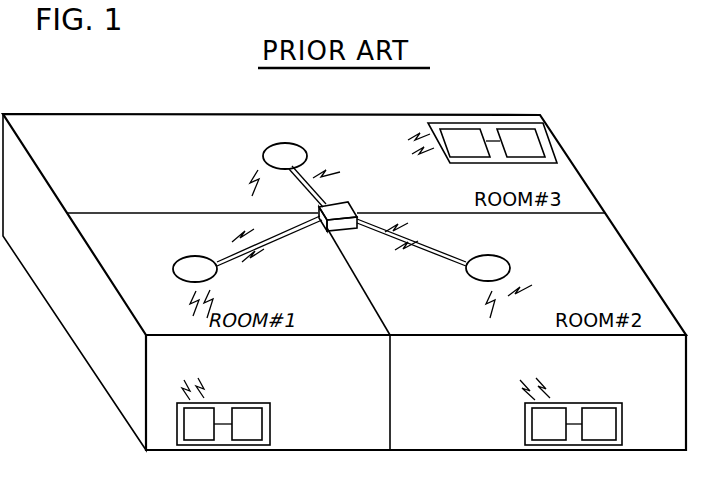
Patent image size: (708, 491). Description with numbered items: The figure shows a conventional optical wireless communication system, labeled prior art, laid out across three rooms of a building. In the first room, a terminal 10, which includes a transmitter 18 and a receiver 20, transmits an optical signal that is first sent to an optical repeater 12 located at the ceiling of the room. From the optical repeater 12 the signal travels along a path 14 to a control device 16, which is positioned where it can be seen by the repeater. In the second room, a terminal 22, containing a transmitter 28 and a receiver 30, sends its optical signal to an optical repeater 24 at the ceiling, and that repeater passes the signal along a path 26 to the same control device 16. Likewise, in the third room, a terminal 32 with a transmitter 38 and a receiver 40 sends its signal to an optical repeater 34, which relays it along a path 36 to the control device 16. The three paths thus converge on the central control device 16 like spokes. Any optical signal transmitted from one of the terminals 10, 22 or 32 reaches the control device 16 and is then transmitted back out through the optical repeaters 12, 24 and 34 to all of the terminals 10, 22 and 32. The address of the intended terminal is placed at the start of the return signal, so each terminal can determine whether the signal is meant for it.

The terminal 10 is at (246, 433).
The optical repeater 12 is at (173, 263).
The path 14 is at (280, 238).
The control device 16 is at (350, 205).
The transmitter 18 is at (195, 445).
The receiver 20 is at (247, 445).
The terminal 22 is at (558, 433).
The optical repeater 24 is at (511, 261).
The path 26 is at (440, 263).
The transmitter 28 is at (550, 445).
The receiver 30 is at (606, 445).
The terminal 32 is at (508, 120).
The optical repeater 34 is at (265, 150).
The path 36 is at (308, 187).
The transmitter 38 is at (518, 128).
The receiver 40 is at (470, 128).